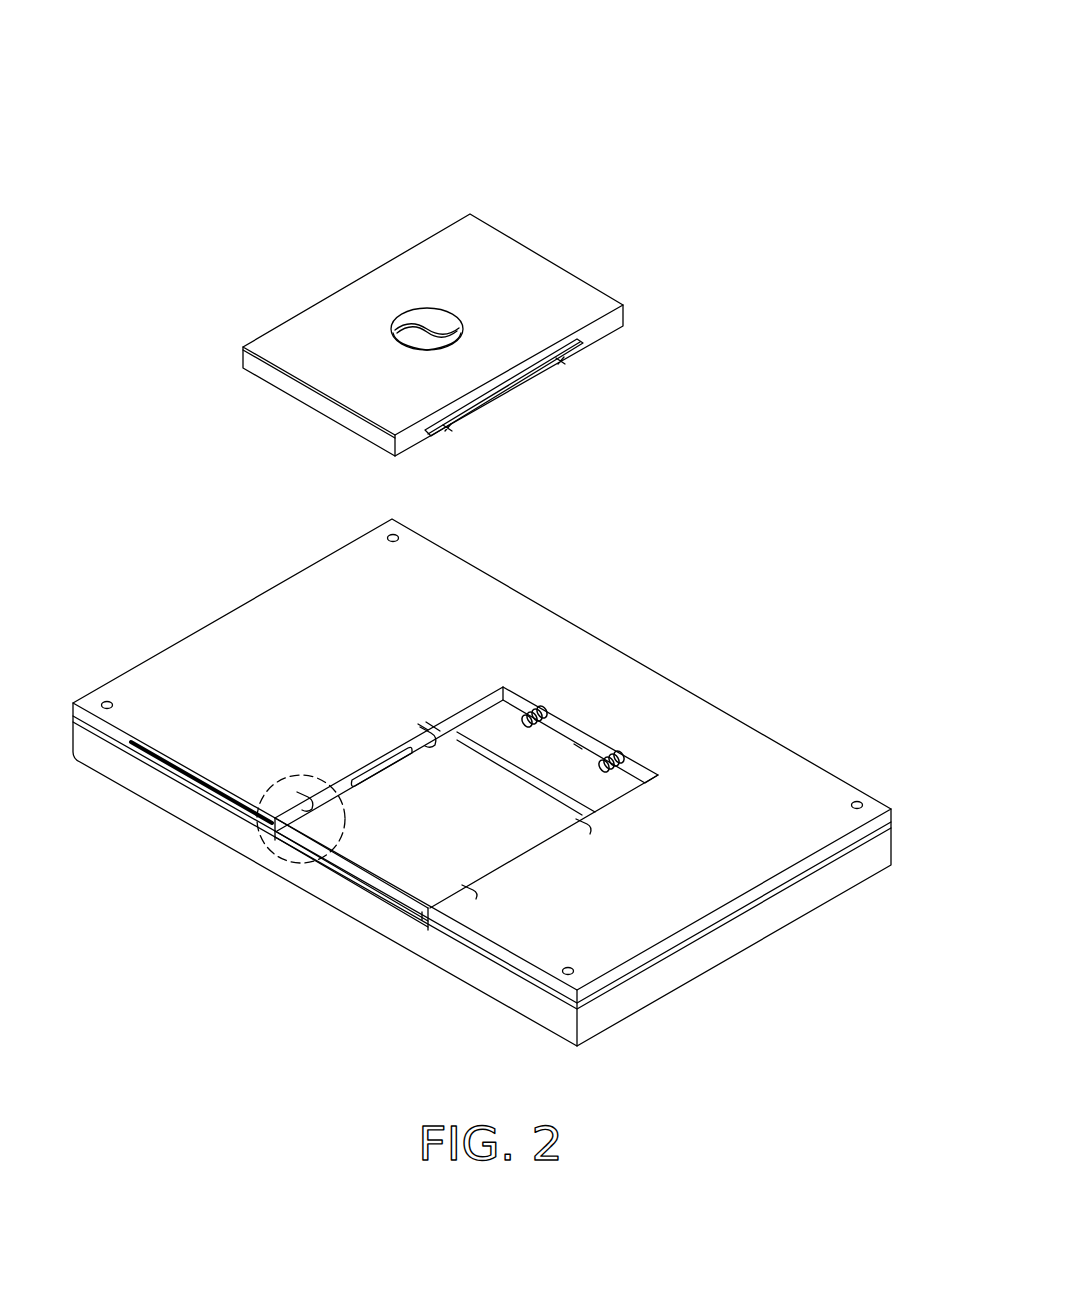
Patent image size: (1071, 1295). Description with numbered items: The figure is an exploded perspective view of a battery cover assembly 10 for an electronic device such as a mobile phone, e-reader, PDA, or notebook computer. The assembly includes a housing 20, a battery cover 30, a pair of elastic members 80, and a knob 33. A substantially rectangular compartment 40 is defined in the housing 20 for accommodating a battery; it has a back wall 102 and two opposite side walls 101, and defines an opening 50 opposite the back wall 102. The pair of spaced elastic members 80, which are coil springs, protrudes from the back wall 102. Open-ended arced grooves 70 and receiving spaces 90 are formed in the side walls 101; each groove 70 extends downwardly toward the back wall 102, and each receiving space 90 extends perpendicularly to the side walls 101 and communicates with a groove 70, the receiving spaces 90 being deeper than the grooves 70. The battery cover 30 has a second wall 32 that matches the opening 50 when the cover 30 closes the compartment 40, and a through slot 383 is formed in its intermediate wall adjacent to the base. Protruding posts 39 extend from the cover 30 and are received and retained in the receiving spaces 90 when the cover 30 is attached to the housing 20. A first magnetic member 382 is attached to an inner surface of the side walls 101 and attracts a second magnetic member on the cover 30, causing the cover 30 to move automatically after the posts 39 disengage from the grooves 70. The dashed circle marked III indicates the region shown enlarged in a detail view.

The battery cover assembly 10 is at (545, 70).
The housing 20 is at (733, 702).
The battery cover 30 is at (590, 267).
The second wall 32 is at (250, 362).
The knob 33 is at (418, 318).
The protruding posts 39 is at (561, 364).
The through slot 383 is at (580, 347).
The first magnetic member 382 is at (383, 748).
The side walls 101 is at (337, 785).
The back wall 102 is at (578, 745).
The receiving spaces 90 is at (445, 735).
The elastic members 80 is at (537, 712).
The grooves 70 is at (426, 725).
The opening 50 is at (333, 863).
The compartment 40 is at (465, 891).
The detail view region III is at (300, 792).